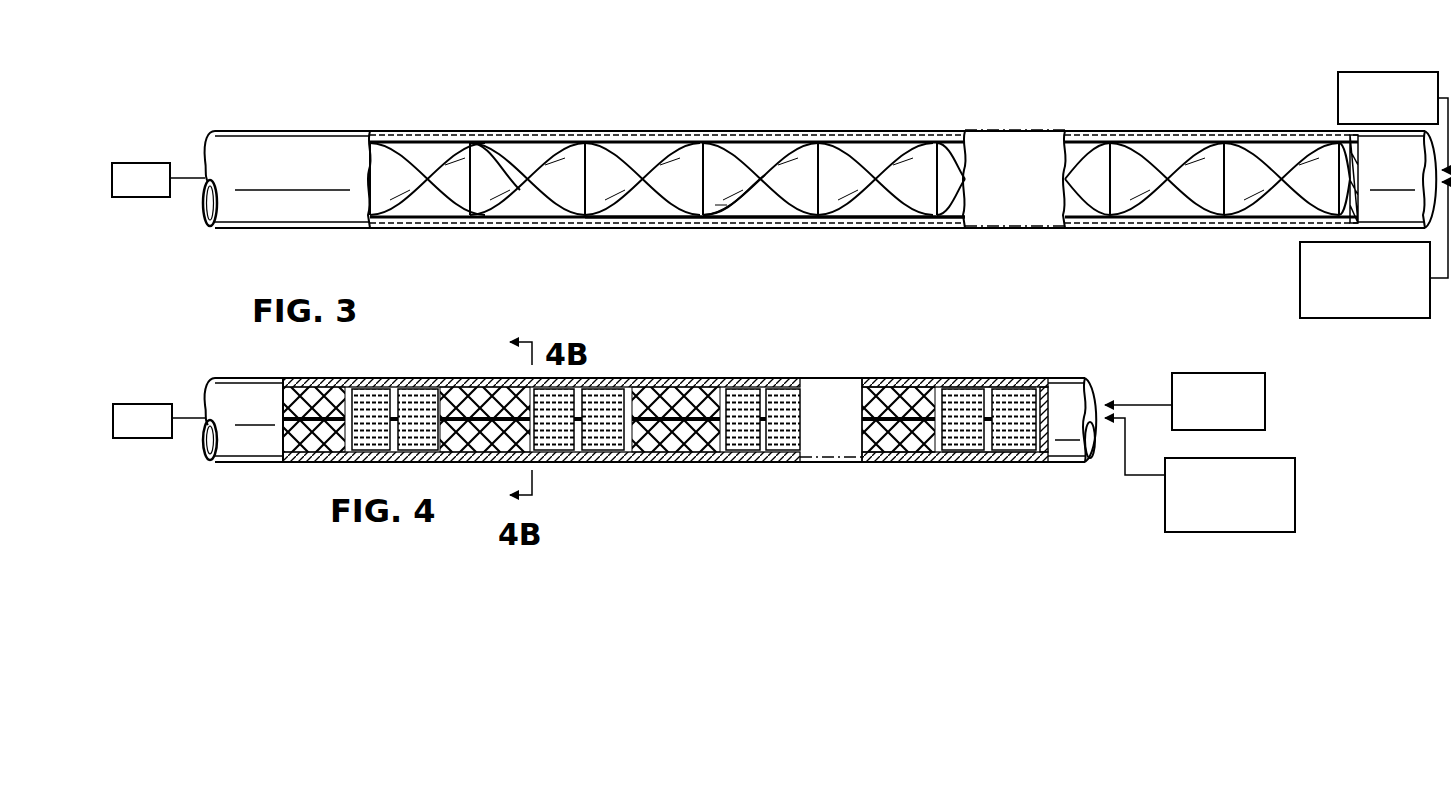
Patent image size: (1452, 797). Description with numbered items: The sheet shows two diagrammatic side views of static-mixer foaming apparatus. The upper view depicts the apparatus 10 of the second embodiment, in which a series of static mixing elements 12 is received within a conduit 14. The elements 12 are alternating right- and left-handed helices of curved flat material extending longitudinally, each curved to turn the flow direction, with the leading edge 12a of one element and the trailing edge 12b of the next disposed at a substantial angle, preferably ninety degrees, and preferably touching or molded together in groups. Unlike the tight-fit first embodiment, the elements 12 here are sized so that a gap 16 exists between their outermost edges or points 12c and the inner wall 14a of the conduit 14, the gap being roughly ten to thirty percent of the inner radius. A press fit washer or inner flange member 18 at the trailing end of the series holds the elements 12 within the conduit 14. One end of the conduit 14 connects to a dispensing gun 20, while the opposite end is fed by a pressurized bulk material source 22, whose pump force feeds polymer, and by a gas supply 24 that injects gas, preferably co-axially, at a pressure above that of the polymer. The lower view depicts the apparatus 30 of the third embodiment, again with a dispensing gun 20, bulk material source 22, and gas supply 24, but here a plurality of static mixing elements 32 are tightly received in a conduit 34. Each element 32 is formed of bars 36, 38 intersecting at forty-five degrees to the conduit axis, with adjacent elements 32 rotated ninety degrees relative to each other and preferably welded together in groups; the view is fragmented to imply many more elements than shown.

In FIG. 3, the apparatus 10 is at (560, 275).
In FIG. 3, the static mixing elements 12 is at (600, 160).
In FIG. 3, the leading edge 12a is at (815, 155).
In FIG. 3, the trailing edge 12b is at (862, 168).
In FIG. 3, the outermost edges or points 12c is at (768, 216).
In FIG. 3, the conduit 14 is at (702, 130).
In FIG. 3, the inner wall 14a is at (649, 214).
In FIG. 3, the gap 16 is at (721, 190).
In FIG. 3, the inner flange member 18 is at (1305, 223).
In FIG. 3, the dispensing gun 20 is at (142, 199).
In FIG. 4, the dispensing gun 20 is at (147, 404).
In FIG. 3, the bulk material source 22 is at (1368, 318).
In FIG. 4, the bulk material source 22 is at (1295, 492).
In FIG. 3, the gas supply 24 is at (1338, 95).
In FIG. 4, the gas supply 24 is at (1222, 373).
In FIG. 4, the apparatus 30 is at (562, 482).
In FIG. 4, the static mixing elements 32 is at (765, 457).
In FIG. 4, the conduit 34 is at (746, 380).
In FIG. 4, the bar 36 is at (893, 454).
In FIG. 4, the bar 38 is at (927, 454).